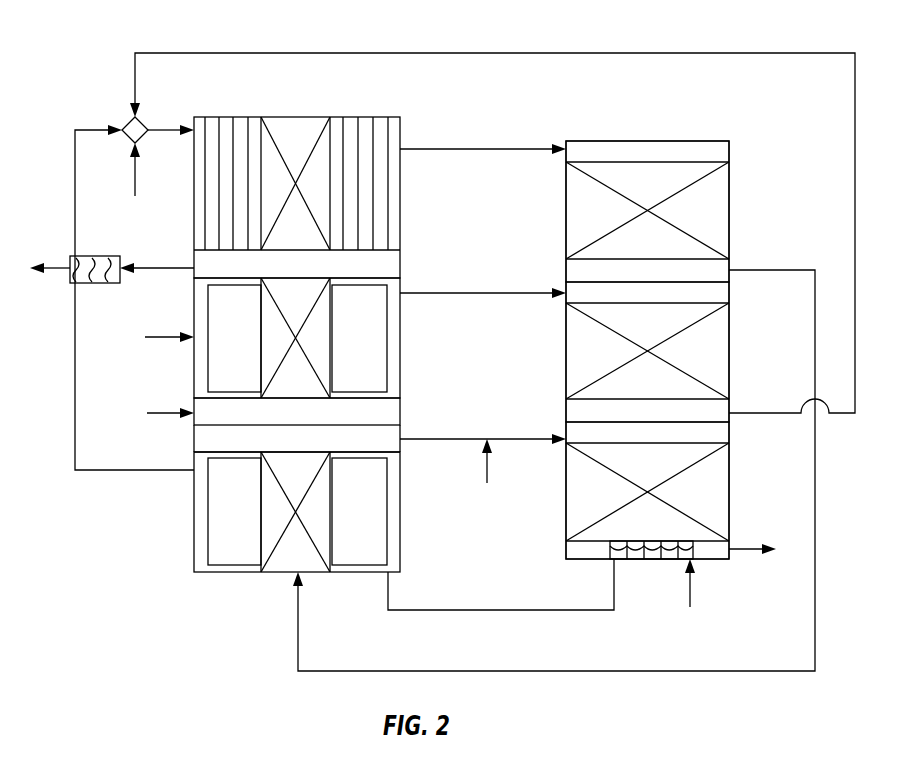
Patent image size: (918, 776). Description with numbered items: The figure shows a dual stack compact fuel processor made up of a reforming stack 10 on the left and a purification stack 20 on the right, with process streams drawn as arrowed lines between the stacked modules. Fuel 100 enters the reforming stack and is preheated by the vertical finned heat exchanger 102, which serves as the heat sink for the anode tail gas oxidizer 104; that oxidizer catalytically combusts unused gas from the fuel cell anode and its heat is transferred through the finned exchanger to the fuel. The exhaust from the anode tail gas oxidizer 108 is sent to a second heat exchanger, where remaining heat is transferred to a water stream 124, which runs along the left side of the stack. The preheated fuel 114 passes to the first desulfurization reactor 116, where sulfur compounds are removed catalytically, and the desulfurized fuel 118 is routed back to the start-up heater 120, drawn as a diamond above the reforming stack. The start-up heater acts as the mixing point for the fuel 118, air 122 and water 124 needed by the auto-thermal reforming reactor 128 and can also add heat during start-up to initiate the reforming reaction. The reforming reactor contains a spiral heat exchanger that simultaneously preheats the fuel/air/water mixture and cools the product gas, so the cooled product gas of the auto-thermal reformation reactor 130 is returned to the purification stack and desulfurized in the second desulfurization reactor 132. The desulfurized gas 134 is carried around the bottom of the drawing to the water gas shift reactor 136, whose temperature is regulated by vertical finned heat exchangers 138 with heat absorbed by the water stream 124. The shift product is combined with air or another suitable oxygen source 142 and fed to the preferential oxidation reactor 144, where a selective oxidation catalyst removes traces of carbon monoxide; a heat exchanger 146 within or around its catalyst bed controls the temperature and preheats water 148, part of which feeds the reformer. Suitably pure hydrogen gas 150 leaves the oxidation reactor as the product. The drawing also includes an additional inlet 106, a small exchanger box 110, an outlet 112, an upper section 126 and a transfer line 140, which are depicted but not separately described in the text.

The reforming stack 10 is at (140, 594).
The purification stack 20 is at (722, 112).
The fuel 100 is at (155, 331).
The vertical finned heat exchanger 102 is at (375, 349).
The anode tail gas oxidizer 104 is at (288, 392).
The second inlet 106 is at (155, 407).
The exhaust from the anode tail gas oxidizer 108 is at (152, 259).
The heat exchanger 110 is at (93, 255).
The exhaust outlet 112 is at (58, 261).
The preheated fuel 114 is at (467, 292).
The first desulfurization reactor 116 is at (667, 334).
The desulfurized fuel 118 is at (354, 53).
The start-up heater 120 is at (144, 119).
The air 122 is at (137, 187).
The water stream 124 is at (75, 190).
The upper treatment section 126 is at (228, 117).
The auto-thermal reforming reactor 128 is at (298, 128).
The cooled product gas of the auto-thermal reformation reactor 130 is at (466, 148).
The second desulfurization reactor 132 is at (667, 187).
The desulfurized gas 134 is at (762, 268).
The water gas shift reactor 136 is at (288, 557).
The vertical finned heat exchangers 138 is at (375, 527).
The transfer line 140 is at (451, 438).
The air or other oxygen source 142 is at (486, 473).
The preferential oxidation reactor 144 is at (667, 474).
The heat exchanger 146 is at (566, 552).
The water 148 is at (693, 587).
The hydrogen gas 150 is at (741, 548).